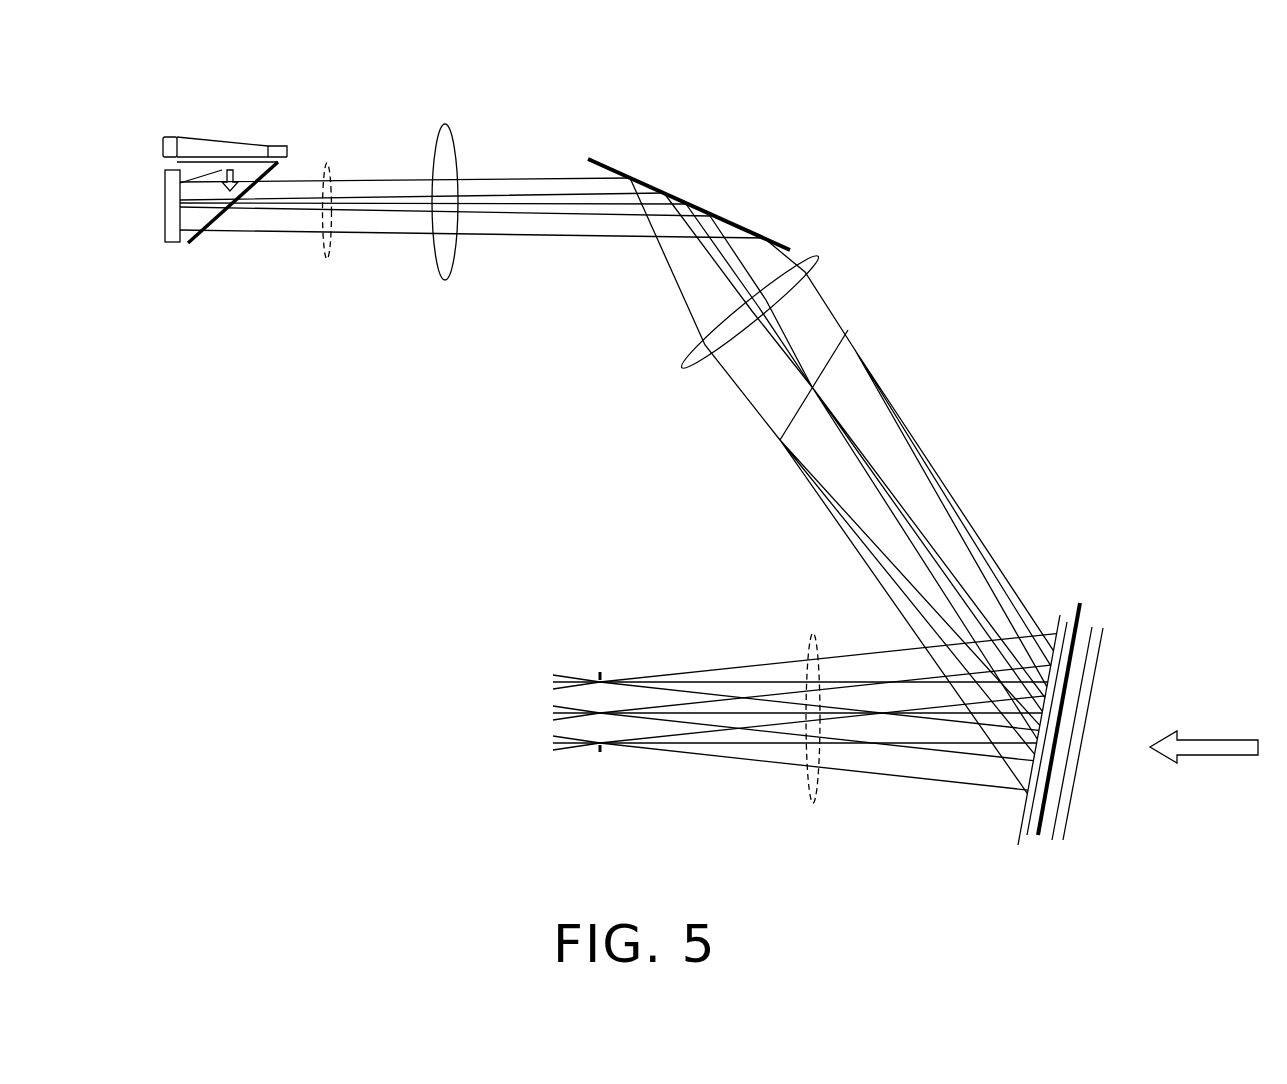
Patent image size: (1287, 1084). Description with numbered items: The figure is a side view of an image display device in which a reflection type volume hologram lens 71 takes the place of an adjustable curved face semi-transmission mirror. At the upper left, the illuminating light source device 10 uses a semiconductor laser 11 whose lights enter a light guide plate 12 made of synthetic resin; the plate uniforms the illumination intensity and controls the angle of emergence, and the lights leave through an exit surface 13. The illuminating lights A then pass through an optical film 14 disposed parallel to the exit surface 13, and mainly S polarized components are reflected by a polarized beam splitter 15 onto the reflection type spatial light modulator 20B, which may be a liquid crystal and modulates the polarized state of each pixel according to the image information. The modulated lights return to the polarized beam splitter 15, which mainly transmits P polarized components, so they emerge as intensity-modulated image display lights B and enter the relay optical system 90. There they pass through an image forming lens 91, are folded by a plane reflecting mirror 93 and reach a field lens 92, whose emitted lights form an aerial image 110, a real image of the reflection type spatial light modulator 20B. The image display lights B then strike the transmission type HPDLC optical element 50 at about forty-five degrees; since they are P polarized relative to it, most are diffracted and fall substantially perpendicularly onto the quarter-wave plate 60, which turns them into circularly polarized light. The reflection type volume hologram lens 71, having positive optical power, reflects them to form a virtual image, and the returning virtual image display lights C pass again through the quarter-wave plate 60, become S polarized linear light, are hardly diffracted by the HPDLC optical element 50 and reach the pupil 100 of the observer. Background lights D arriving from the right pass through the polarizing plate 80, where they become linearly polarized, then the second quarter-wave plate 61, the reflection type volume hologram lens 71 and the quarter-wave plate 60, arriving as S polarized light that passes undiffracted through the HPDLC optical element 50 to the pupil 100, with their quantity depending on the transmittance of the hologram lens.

The illuminating light source device 10 is at (342, 42).
The semiconductor laser 11 is at (173, 140).
The light guide plate 12 is at (237, 140).
The exit surface 13 is at (175, 162).
The optical film 14 is at (278, 146).
The polarized beam splitter 15 is at (276, 165).
The reflection type spatial light modulator 20B is at (173, 225).
The HPDLC optical element 50 is at (1062, 615).
The quarter-wave plate 60 is at (1028, 835).
The second quarter-wave plate 61 is at (1053, 835).
The reflection type volume hologram lens 71 is at (1082, 603).
The polarizing plate 80 is at (1102, 630).
The relay optical system 90 is at (578, 270).
The image forming lens 91 is at (443, 280).
The field lens 92 is at (682, 368).
The plane reflecting mirror 93 is at (617, 172).
The pupil 100 is at (600, 755).
The aerial image 110 is at (848, 330).
The illuminating lights A is at (165, 195).
The image display lights B is at (322, 246).
The virtual image display lights C is at (808, 782).
The background lights D is at (1204, 735).